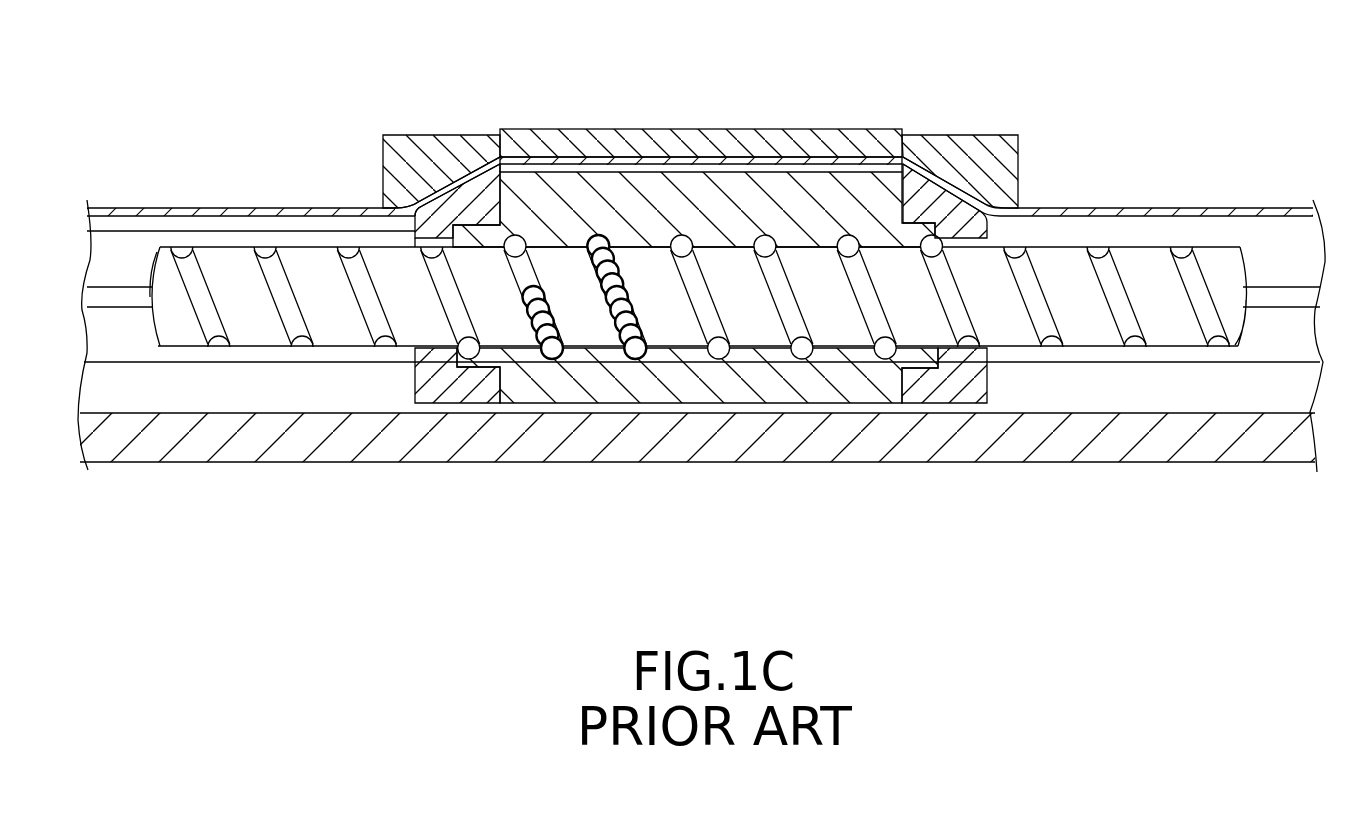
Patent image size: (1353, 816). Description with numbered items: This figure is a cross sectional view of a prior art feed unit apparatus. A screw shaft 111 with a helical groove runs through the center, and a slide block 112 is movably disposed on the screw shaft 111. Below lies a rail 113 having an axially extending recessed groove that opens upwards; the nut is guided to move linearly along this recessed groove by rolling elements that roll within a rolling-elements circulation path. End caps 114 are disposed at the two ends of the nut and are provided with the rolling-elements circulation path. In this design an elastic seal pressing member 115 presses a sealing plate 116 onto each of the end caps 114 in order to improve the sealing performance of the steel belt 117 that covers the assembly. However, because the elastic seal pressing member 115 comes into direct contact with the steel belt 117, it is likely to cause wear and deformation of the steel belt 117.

The screw shaft 111 is at (1137, 268).
The slide block 112 is at (827, 382).
The rail 113 is at (1120, 435).
The end cap 114 is at (932, 202).
The elastic seal pressing member 115 is at (418, 133).
The sealing plate 116 is at (983, 204).
The steel belt 117 is at (197, 212).